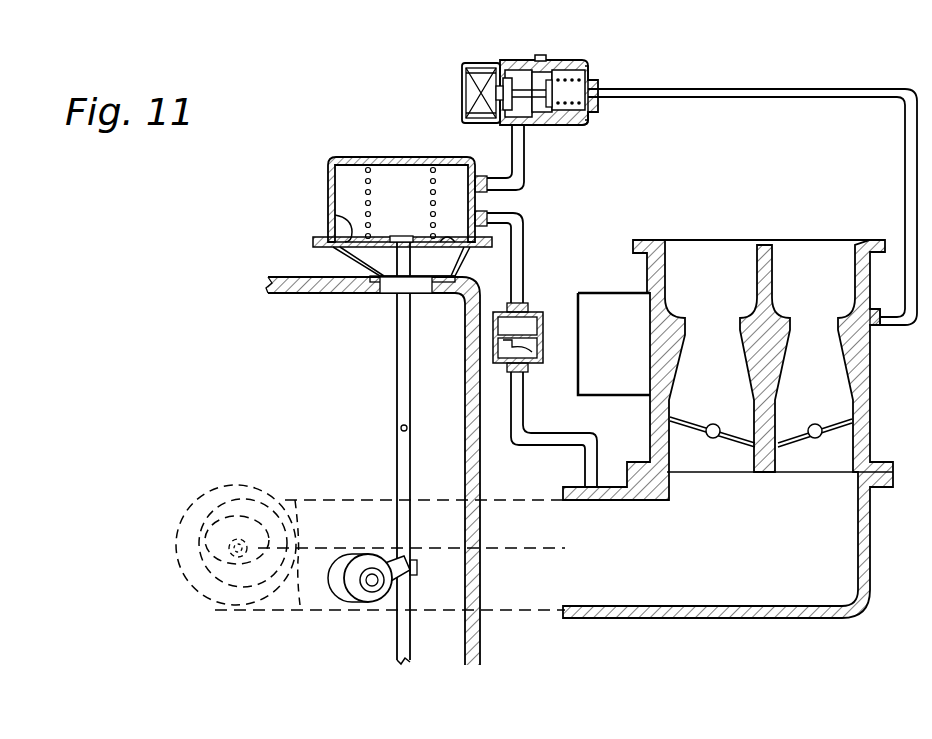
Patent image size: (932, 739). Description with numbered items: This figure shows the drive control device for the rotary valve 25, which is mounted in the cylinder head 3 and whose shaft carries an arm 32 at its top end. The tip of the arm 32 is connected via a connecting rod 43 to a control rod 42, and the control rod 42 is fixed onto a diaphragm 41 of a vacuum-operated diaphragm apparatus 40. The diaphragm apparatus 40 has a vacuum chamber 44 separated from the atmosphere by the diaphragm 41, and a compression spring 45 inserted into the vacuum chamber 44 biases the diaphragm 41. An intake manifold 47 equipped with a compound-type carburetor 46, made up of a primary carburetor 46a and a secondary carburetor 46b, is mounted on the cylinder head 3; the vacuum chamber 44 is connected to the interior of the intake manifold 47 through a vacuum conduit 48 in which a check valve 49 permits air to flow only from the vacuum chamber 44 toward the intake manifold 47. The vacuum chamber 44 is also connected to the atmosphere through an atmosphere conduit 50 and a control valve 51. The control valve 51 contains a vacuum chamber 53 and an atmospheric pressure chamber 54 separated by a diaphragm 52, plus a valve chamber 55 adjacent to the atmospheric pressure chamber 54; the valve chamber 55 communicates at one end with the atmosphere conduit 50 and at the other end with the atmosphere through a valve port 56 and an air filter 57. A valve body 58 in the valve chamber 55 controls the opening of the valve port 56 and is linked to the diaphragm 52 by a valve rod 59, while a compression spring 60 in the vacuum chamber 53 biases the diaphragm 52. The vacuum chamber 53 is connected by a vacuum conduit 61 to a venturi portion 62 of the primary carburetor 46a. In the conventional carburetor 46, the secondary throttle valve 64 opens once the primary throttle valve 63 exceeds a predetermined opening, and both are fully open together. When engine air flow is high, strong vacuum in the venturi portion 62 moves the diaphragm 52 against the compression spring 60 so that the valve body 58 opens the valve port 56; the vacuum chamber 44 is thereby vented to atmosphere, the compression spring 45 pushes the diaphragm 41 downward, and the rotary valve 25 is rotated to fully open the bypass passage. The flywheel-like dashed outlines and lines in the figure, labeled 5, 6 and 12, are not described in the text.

The cylinder head 3 is at (482, 645).
The flywheel / cam 5 is at (228, 592).
The belt / cam line 6 is at (318, 498).
The cam profile 12 is at (295, 520).
The rotary valve 25 is at (360, 618).
The arm 32 is at (388, 560).
The diaphragm apparatus 40 is at (333, 155).
The diaphragm 41 is at (335, 220).
The control rod 42 is at (410, 345).
The connecting rod 43 is at (397, 652).
The vacuum chamber 44 is at (410, 162).
The compression spring 45 is at (372, 185).
The carburetor 46 is at (628, 245).
The primary carburetor 46a is at (810, 242).
The secondary carburetor 46b is at (708, 240).
The intake manifold 47 is at (700, 618).
The vacuum conduit 48 is at (523, 240).
The check valve 49 is at (548, 323).
The atmosphere conduit 50 is at (525, 160).
The control valve 51 is at (508, 60).
The diaphragm 52 is at (570, 70).
The vacuum chamber 53 is at (590, 66).
The atmospheric pressure chamber 54 is at (542, 72).
The valve chamber 55 is at (518, 70).
The valve port 56 is at (532, 58).
The air filter 57 is at (462, 88).
The valve body 58 is at (507, 112).
The valve rod 59 is at (542, 112).
The compression spring 60 is at (585, 125).
The vacuum conduit 61 is at (720, 89).
The venturi portion 62 is at (815, 308).
The primary throttle valve 63 is at (835, 418).
The secondary throttle valve 64 is at (739, 420).